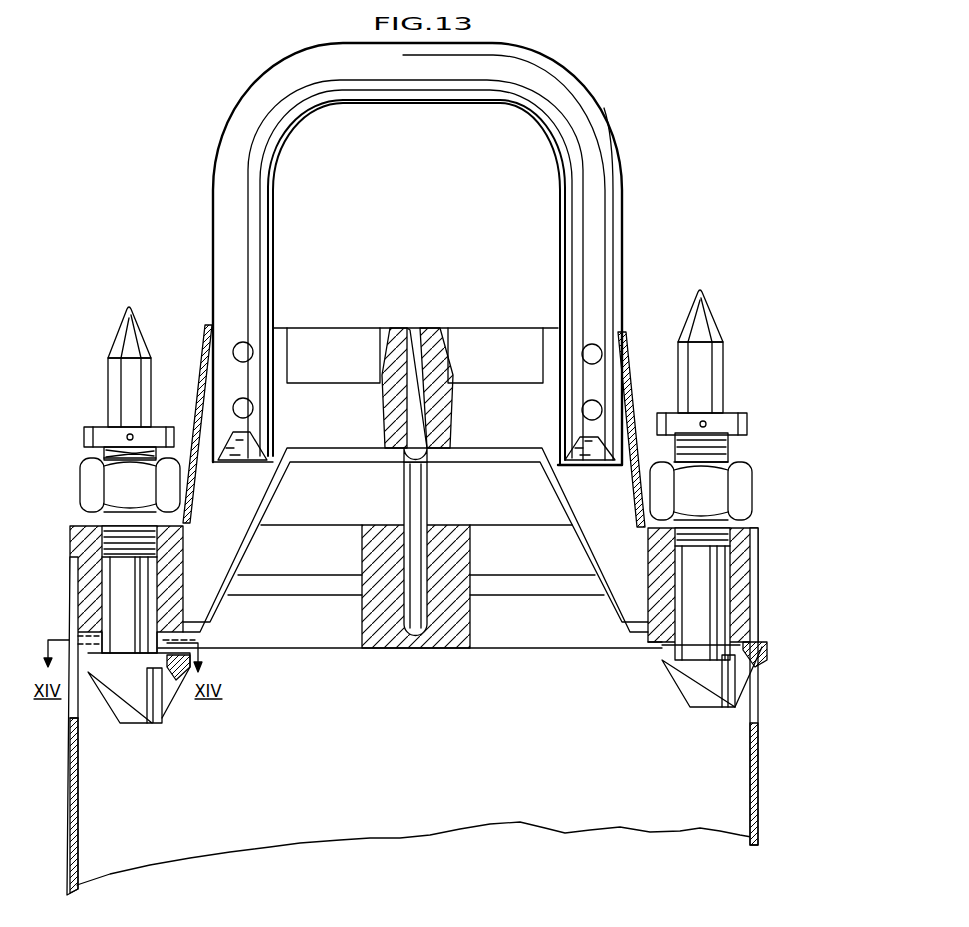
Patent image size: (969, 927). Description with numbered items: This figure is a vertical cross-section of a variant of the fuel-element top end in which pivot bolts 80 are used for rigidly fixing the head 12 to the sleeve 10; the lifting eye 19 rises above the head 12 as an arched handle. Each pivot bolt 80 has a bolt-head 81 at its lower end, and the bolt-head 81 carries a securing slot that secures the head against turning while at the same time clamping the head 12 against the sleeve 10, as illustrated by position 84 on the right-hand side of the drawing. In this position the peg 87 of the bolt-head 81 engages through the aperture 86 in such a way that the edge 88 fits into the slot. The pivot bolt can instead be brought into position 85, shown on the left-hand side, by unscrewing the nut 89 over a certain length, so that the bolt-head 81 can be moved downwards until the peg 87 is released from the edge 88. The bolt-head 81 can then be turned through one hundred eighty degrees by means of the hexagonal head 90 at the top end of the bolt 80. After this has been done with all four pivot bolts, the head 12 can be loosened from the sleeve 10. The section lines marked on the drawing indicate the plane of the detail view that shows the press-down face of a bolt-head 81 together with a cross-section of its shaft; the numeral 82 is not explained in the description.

The sleeve 10 is at (75, 782).
The head 12 is at (87, 542).
The lifting eye 19 is at (505, 107).
The pivot bolt 80 is at (127, 590).
The bolt-head 81 is at (130, 710).
The pin 82 is at (118, 652).
The clamping position 84 is at (771, 658).
The released position 85 is at (62, 625).
The aperture 86 is at (760, 705).
The peg 87 is at (767, 653).
The edge 88 is at (760, 640).
The nut 89 is at (82, 490).
The hexagonal head 90 is at (130, 382).